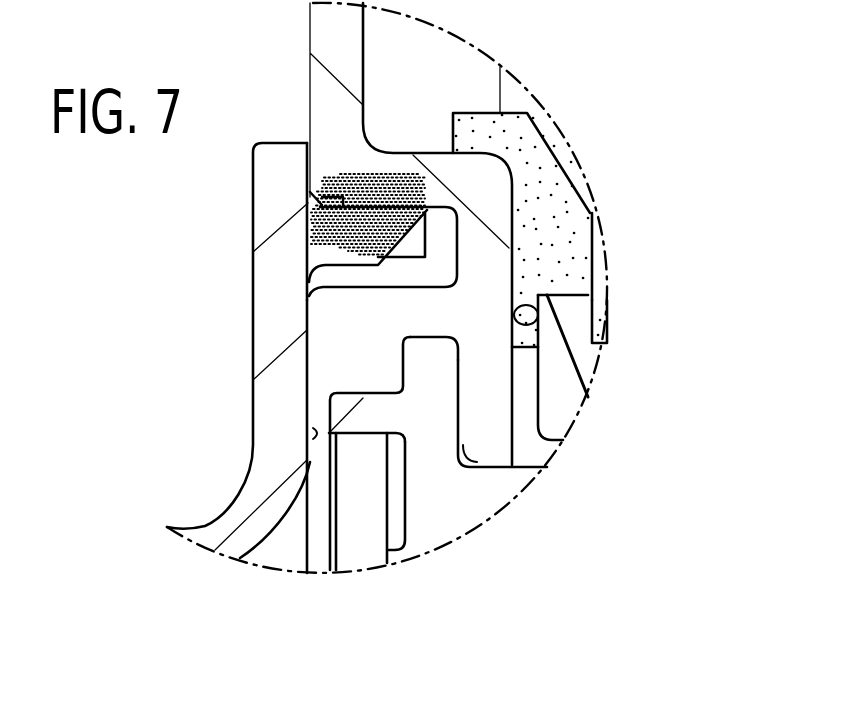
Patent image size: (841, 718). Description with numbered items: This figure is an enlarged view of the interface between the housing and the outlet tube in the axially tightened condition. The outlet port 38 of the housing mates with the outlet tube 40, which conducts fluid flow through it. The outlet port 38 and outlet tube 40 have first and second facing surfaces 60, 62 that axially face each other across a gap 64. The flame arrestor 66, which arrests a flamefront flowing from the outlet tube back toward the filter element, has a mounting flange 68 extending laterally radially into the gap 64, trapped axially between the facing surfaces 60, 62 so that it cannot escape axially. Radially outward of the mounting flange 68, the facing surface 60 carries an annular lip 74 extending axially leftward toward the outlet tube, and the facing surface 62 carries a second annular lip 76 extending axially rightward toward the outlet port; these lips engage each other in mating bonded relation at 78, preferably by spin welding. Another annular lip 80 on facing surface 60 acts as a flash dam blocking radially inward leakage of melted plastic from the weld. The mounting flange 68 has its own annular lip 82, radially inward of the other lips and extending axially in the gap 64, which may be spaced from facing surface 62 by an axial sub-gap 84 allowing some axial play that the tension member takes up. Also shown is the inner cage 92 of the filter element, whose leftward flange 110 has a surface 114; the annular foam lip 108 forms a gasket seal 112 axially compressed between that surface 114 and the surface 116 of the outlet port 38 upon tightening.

The outlet port 38 is at (505, 452).
The outlet tube 40 is at (202, 522).
The first facing surface 60 is at (457, 437).
The second facing surface 62 is at (313, 436).
The gap 64 is at (377, 371).
The flame arrestor 66 is at (430, 525).
The mounting flange 68 is at (430, 355).
The annular lip 74 is at (418, 153).
The second annular lip 76 is at (347, 253).
The mating bonded relation 78 is at (362, 180).
The annular lip 80 is at (327, 305).
The annular lip 82 is at (360, 417).
The axial sub-gap 84 is at (318, 421).
The inner cage 92 is at (588, 361).
The annular foam lip 108 is at (535, 168).
The leftward flange 110 is at (577, 298).
The gasket or seal 112 is at (513, 300).
The surface of flange 114 is at (547, 305).
The surface of outlet port 116 is at (511, 314).